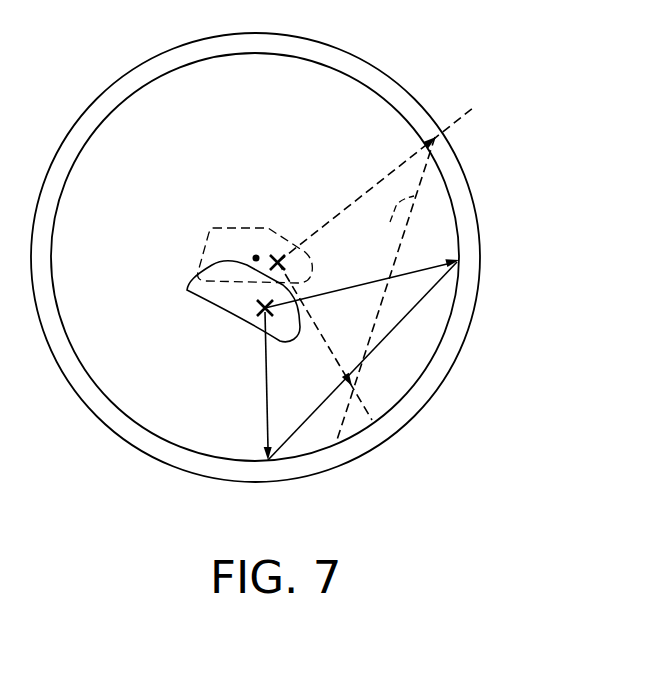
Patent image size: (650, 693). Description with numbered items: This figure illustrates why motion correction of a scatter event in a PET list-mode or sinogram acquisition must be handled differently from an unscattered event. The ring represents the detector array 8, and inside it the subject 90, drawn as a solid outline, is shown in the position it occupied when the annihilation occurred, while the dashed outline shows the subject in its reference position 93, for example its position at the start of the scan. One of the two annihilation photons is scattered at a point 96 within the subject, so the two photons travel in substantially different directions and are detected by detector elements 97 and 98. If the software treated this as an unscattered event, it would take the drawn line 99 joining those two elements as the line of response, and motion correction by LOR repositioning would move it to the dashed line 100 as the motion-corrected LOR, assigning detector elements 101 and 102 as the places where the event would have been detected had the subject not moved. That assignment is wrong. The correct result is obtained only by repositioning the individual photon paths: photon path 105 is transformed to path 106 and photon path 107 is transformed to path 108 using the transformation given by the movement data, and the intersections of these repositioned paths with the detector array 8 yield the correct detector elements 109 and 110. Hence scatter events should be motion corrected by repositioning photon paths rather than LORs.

The detector array 8 is at (405, 90).
The subject 90 is at (188, 293).
The subject in reference position 93 is at (206, 243).
The scatter point 96 is at (252, 312).
The detector element 97 is at (264, 464).
The detector element 98 is at (462, 261).
The line of response (LOR) 99 is at (422, 302).
The motion-corrected LOR 100 is at (390, 222).
The detector element 101 is at (427, 146).
The detector element 102 is at (336, 442).
The photon path 105 is at (266, 423).
The repositioned photon path 106 is at (358, 393).
The photon path 107 is at (378, 276).
The repositioned photon path 108 is at (363, 190).
The detector element 109 is at (372, 421).
The detector element 110 is at (434, 138).